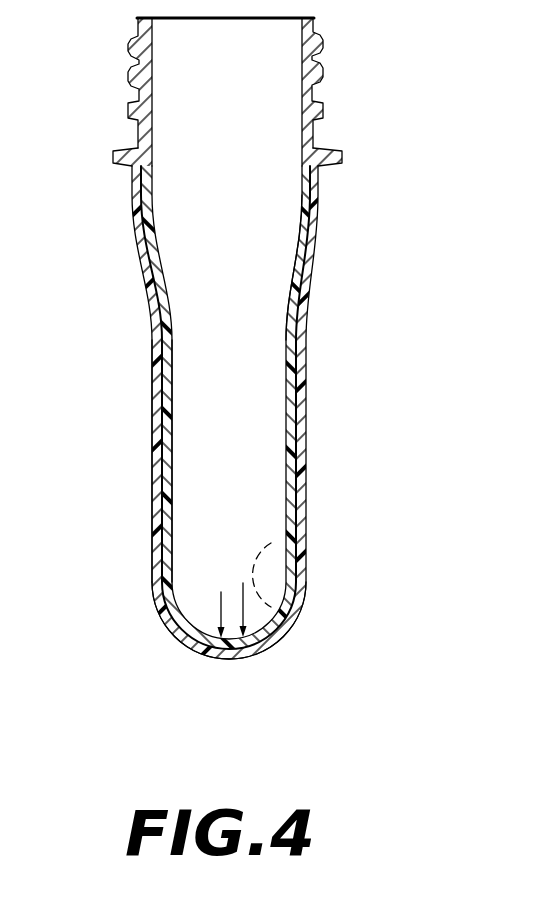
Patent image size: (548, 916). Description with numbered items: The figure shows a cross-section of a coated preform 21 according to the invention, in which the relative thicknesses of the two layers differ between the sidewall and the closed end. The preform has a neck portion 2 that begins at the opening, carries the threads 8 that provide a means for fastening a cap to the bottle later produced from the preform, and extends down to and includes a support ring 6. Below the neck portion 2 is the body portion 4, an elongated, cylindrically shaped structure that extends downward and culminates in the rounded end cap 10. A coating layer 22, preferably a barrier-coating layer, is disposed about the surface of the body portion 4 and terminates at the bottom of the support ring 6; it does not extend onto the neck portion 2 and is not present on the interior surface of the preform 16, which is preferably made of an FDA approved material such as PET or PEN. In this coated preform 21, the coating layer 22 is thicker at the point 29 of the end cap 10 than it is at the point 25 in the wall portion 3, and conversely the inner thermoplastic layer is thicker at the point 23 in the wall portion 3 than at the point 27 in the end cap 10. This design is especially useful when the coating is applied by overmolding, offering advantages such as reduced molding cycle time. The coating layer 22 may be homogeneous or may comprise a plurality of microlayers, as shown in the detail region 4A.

The neck portion 2 is at (271, 93).
The wall portion 3 is at (137, 345).
The body portion 4 is at (271, 453).
The support ring 6 is at (342, 160).
The threads 8 is at (326, 57).
The end cap 10 is at (296, 652).
The interior surface of the preform 16 is at (280, 272).
The coated preform 21 is at (331, 412).
The coating layer 22 is at (314, 400).
The point in the wall portion 23 is at (227, 460).
The point in the wall portion 25 is at (243, 513).
The point in the end cap 27 is at (243, 668).
The point of the end cap 29 is at (221, 668).
The detail view of microlayers 4A is at (318, 576).